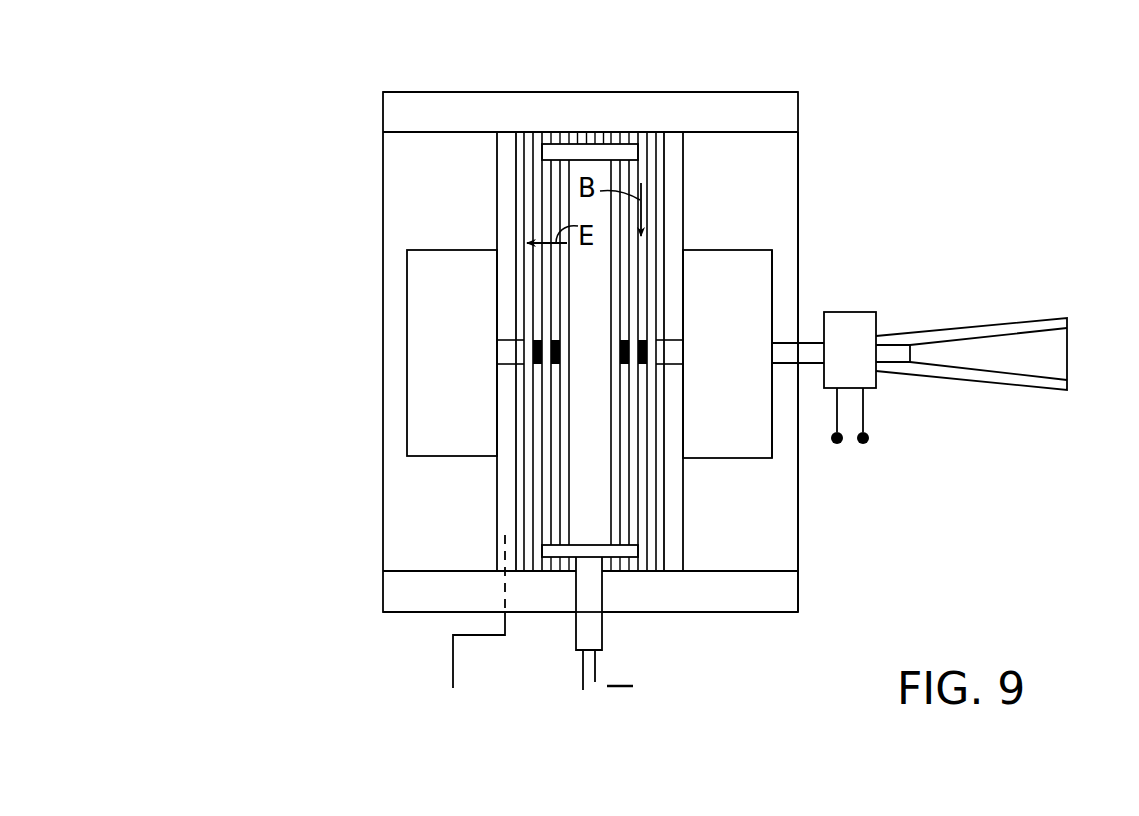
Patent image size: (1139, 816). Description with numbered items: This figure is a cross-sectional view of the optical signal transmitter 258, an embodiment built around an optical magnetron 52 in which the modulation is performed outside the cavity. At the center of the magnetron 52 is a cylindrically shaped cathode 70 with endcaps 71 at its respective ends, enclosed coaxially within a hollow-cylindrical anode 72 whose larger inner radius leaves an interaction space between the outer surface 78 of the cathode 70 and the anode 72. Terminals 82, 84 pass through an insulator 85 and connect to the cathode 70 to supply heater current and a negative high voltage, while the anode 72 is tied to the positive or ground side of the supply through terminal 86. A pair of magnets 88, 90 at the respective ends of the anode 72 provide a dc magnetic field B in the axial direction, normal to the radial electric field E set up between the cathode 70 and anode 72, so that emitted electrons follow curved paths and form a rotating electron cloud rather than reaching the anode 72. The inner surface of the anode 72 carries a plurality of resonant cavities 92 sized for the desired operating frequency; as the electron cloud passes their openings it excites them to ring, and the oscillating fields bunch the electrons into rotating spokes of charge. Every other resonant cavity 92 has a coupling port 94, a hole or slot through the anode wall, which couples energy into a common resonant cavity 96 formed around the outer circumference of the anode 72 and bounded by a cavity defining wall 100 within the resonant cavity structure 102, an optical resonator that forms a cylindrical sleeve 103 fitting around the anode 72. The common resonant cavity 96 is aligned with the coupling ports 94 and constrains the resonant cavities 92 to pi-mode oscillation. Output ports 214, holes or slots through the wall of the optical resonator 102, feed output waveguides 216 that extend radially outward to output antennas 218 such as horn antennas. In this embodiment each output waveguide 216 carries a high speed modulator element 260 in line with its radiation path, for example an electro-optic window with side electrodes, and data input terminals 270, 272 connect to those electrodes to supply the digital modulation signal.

The optical signal transmitter 258 is at (357, 67).
The magnetron 52 is at (434, 92).
The cathode 70 is at (583, 172).
The endcaps 71 is at (598, 152).
The anode 72 is at (507, 143).
The cylindrical sleeve 103 is at (682, 148).
The magnet 88 is at (800, 110).
The magnet 90 is at (738, 597).
The resonant cavity structure 102 is at (777, 558).
The outer surface of the cathode 78 is at (612, 178).
The coupling port 94 is at (516, 357).
The resonant cavities 92 is at (524, 490).
The common resonant cavity 96 is at (727, 263).
The cavity defining wall 100 is at (771, 437).
The output ports 214 is at (785, 340).
The modulator element 260 is at (855, 327).
The output waveguide 216 is at (887, 334).
The output antenna 218 is at (1018, 320).
The data input terminal 270 is at (865, 412).
The data input terminal 272 is at (841, 422).
The insulator 85 is at (597, 628).
The terminal 82 is at (583, 690).
The terminal 84 is at (595, 682).
The terminal 86 is at (455, 672).